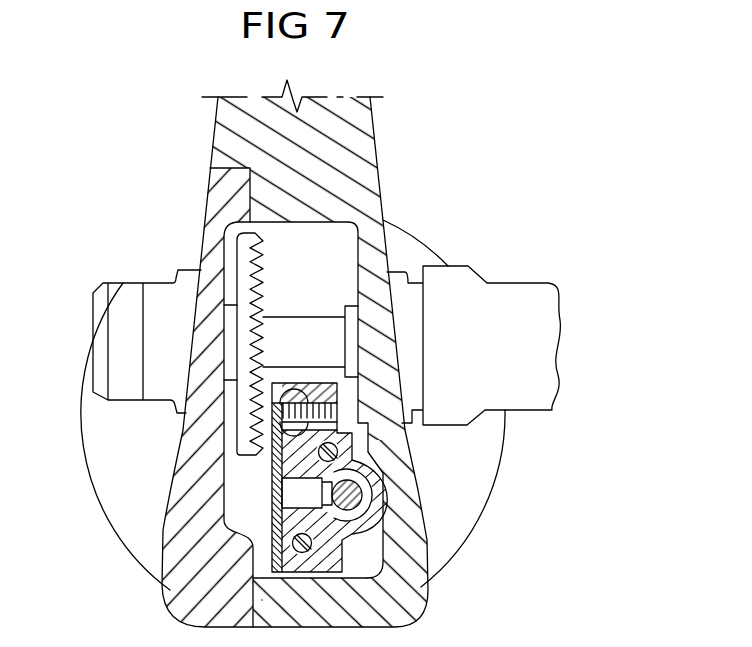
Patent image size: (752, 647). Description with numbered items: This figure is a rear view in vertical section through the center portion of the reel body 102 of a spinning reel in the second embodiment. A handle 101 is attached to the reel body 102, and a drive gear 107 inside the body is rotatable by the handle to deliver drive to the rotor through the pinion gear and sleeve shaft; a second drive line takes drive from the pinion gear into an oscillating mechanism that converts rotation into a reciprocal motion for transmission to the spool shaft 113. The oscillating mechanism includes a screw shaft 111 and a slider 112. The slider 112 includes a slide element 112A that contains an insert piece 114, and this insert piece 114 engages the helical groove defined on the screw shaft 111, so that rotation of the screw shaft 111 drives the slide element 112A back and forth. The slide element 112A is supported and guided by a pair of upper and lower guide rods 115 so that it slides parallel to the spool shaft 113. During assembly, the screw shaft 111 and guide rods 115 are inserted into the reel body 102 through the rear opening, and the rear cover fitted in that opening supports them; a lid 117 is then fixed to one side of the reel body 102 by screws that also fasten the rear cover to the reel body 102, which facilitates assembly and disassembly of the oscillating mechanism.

The handle 101 is at (512, 293).
The reel body 102 is at (363, 140).
The drive gear 107 is at (237, 250).
The screw shaft 111 is at (352, 497).
The slider 112 is at (415, 605).
The slide element 112A is at (340, 543).
The spool shaft 113 is at (292, 393).
The insert piece 114 is at (293, 495).
The guide rods 115 is at (333, 449).
The lid 117 is at (183, 452).